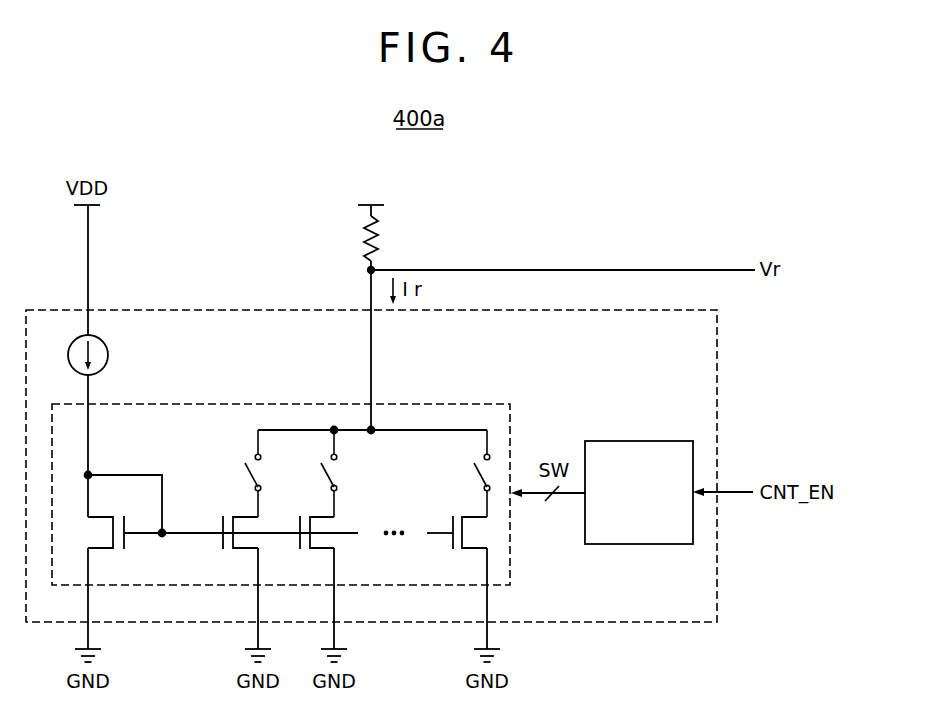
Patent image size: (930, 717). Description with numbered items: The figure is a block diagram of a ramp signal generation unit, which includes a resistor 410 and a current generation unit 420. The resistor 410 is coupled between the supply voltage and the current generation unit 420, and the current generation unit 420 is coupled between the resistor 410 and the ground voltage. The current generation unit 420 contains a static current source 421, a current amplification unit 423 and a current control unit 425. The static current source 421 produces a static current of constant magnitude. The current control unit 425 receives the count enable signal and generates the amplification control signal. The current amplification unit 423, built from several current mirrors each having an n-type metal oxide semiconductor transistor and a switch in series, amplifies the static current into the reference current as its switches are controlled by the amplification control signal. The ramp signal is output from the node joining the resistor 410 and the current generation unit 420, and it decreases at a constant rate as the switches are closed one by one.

The resistor 410 is at (381, 246).
The current generation unit 420 is at (226, 309).
The static current source 421 is at (108, 354).
The current amplification unit 423 is at (295, 402).
The current control unit 425 is at (636, 441).